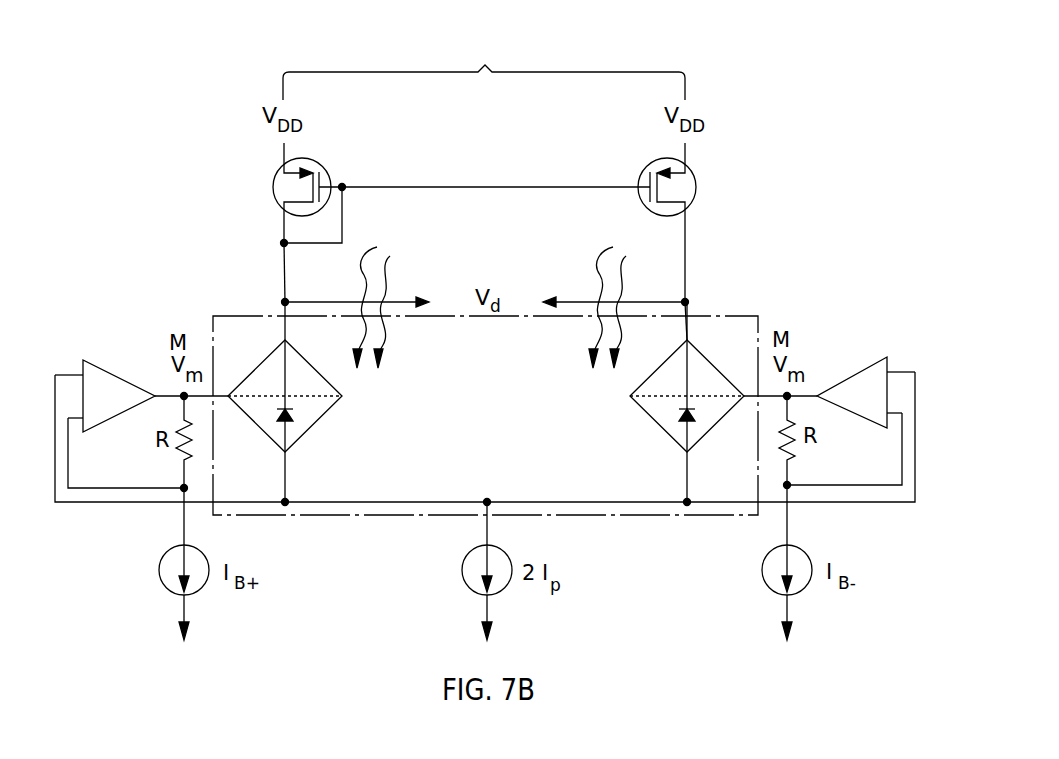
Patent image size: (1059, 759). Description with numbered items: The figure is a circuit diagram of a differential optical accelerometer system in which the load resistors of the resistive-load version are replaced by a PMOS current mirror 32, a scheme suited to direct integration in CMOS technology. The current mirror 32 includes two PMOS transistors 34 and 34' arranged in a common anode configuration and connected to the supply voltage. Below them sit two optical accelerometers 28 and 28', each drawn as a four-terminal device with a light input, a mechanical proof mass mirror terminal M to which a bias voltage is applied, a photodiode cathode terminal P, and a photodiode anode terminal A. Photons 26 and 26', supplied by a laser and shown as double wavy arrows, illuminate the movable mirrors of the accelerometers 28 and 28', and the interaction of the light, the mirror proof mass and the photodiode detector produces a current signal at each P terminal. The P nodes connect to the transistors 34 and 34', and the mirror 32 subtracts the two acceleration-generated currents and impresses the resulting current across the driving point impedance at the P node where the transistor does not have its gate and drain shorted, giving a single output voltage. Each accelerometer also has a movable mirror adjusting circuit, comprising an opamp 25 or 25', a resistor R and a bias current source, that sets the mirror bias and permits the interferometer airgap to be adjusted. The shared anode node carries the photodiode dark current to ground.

The PMOS current mirror 32 is at (484, 69).
The PMOS transistor 34 is at (272, 202).
The PMOS transistor 34' is at (708, 230).
The photons 26 is at (377, 292).
The photons 26' is at (609, 292).
The opamp 25 is at (141, 368).
The opamp 25' is at (829, 364).
The optical accelerometer 28 is at (329, 402).
The optical accelerometer 28' is at (644, 402).